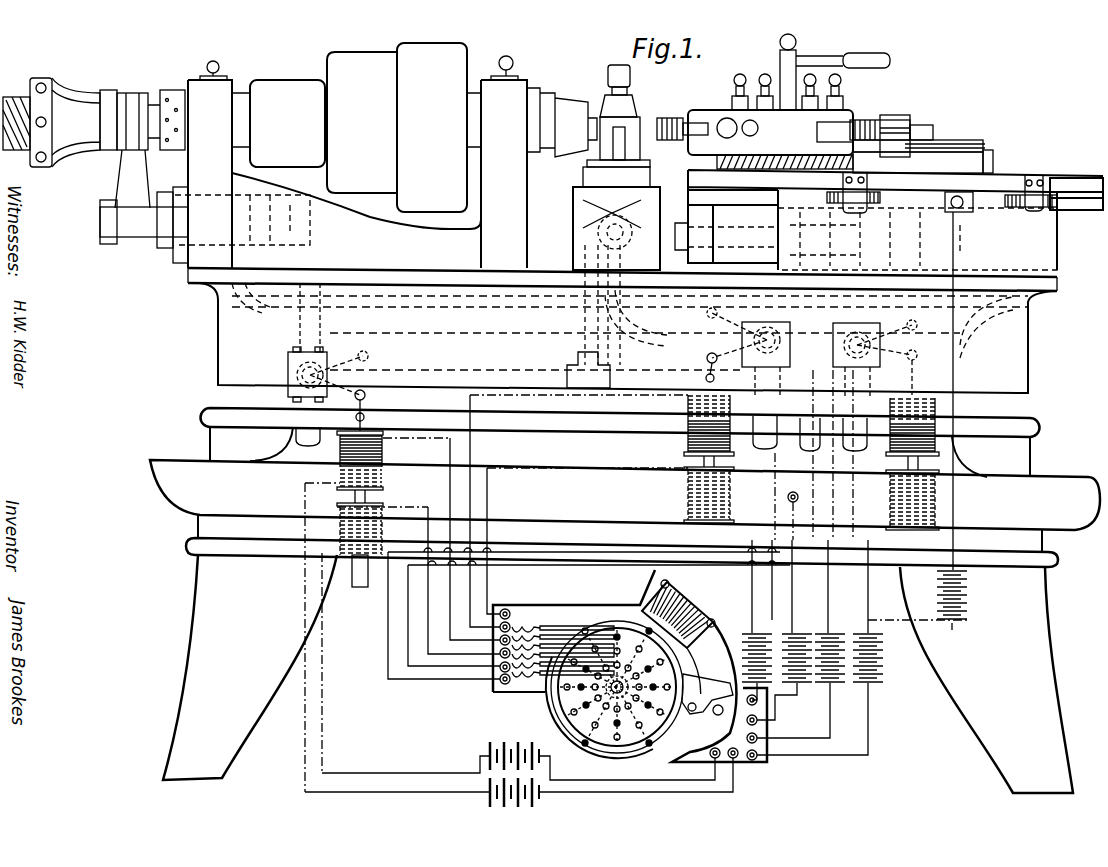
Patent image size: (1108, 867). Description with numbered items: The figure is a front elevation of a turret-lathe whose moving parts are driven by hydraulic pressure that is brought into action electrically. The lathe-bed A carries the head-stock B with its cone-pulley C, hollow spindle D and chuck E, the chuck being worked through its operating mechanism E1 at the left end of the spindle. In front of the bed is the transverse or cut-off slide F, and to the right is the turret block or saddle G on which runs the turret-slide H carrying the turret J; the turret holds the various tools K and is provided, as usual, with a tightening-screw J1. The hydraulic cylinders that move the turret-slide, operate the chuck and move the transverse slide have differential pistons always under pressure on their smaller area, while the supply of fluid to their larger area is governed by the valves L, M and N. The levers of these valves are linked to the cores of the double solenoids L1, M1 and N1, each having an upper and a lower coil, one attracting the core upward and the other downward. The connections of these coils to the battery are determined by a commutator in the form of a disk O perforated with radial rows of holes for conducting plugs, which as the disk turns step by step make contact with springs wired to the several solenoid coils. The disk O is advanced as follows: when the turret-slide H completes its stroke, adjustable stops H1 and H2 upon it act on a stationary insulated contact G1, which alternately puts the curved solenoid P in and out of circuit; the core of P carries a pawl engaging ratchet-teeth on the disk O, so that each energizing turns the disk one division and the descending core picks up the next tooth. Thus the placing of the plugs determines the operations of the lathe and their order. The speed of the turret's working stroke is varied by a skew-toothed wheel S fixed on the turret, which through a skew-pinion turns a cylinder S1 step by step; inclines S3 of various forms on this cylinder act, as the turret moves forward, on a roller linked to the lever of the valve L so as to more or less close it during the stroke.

The lathe-bed A is at (625, 530).
The head-stock B is at (350, 162).
The cone-pulley C is at (356, 127).
The hollow spindle D is at (180, 88).
The chuck E is at (562, 122).
The chuck operating mechanism E1 is at (95, 153).
The transverse or cut-off slide F is at (613, 226).
The turret block or saddle G is at (889, 220).
The stationary insulated contact G1 is at (968, 213).
The turret-slide H is at (1076, 178).
The adjustable stop H1 is at (880, 199).
The adjustable stop H2 is at (1012, 190).
The turret J is at (770, 114).
The tightening-screw J1 is at (835, 69).
The tools K is at (700, 121).
The skew-toothed wheel S is at (712, 158).
The cylinder S1 is at (945, 140).
The inclines S3 is at (965, 140).
The valve M is at (326, 364).
The double solenoid M1 is at (378, 482).
The valve N is at (748, 356).
The double solenoid N1 is at (726, 459).
The valve L is at (863, 334).
The double solenoid L1 is at (892, 464).
The commutator disk O is at (560, 702).
The curved solenoid P is at (708, 590).